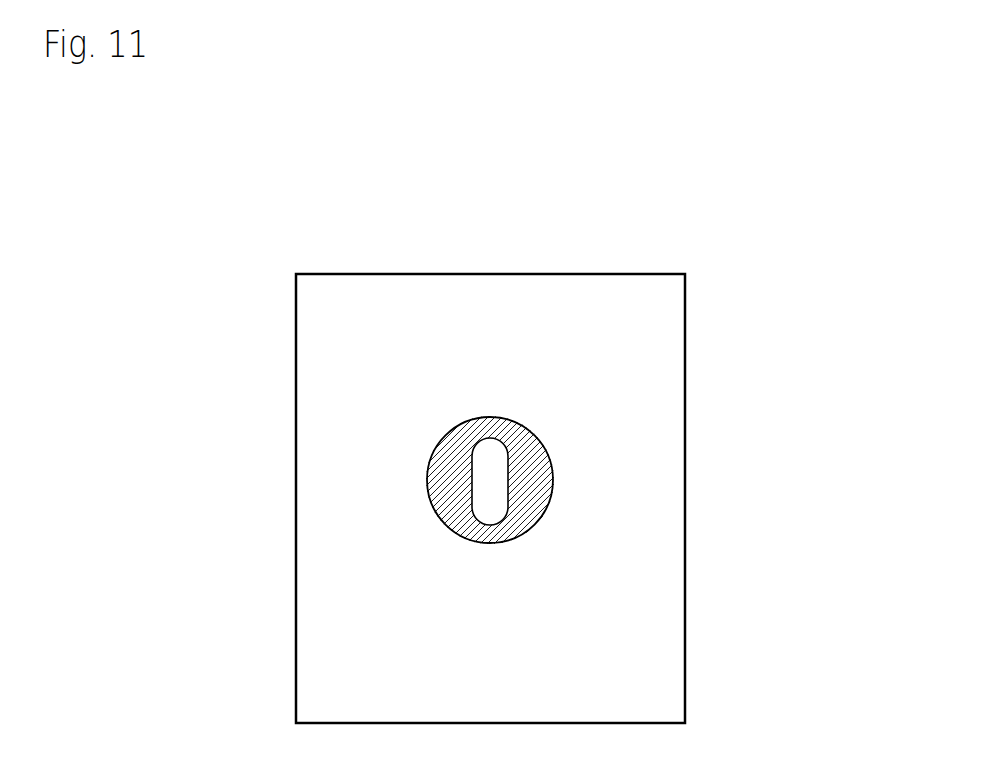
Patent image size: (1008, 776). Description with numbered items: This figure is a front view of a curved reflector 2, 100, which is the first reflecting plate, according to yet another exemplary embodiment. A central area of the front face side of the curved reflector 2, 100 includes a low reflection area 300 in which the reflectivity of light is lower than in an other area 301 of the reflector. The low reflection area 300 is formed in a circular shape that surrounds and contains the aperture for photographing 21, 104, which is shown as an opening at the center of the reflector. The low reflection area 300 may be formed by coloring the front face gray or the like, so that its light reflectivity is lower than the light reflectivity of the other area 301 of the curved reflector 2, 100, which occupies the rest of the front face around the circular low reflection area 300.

The curved reflector 2 is at (510, 498).
The curved reflector 100 is at (510, 498).
The aperture for photographing 21 is at (523, 480).
The aperture for photographing 104 is at (523, 480).
The low reflection area 300 is at (428, 470).
The other area 301 is at (340, 558).